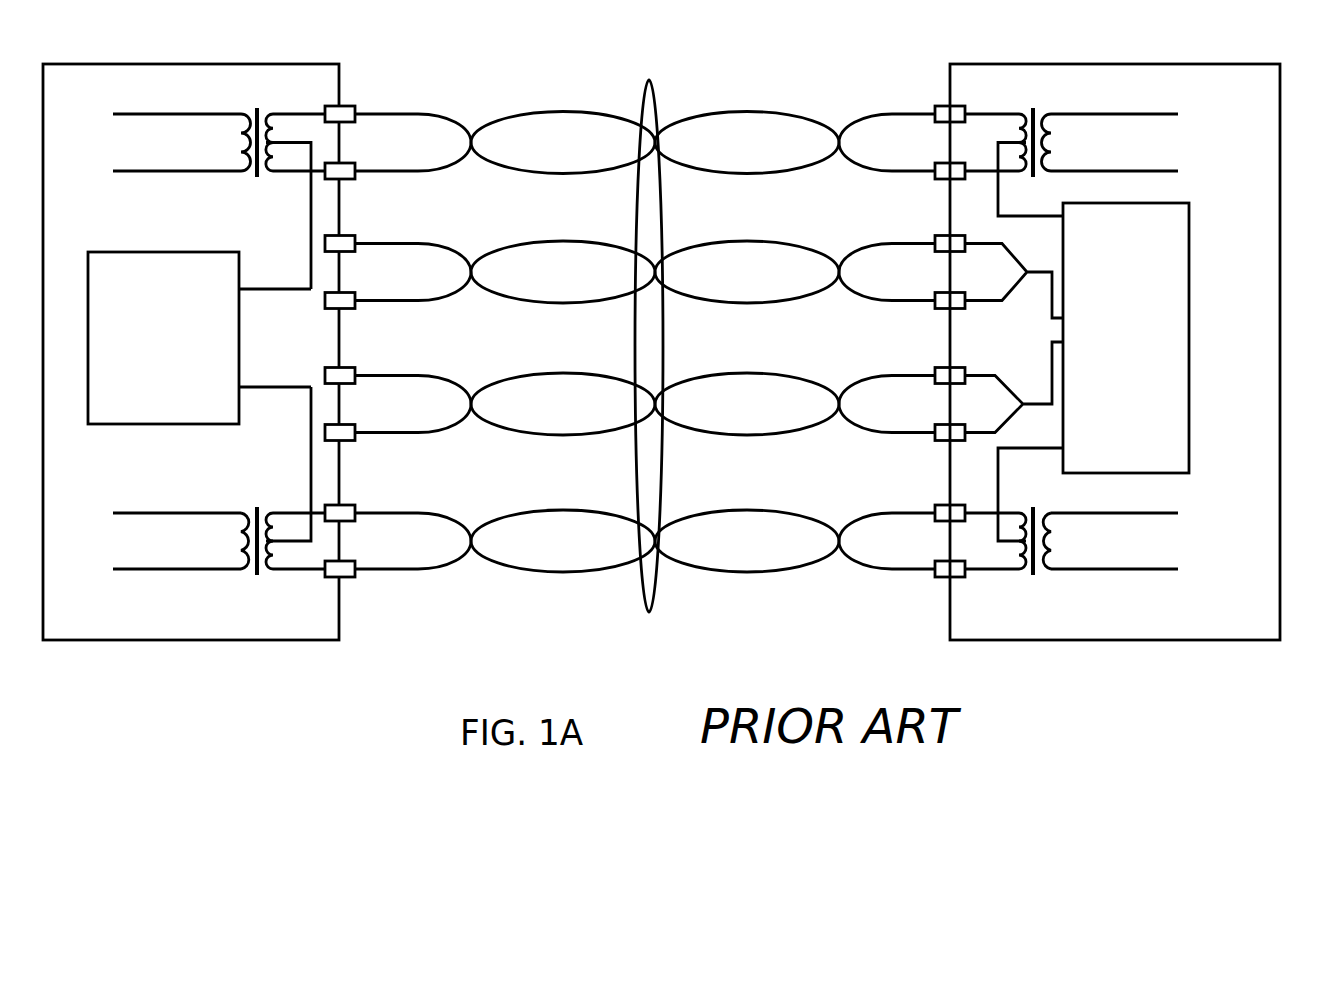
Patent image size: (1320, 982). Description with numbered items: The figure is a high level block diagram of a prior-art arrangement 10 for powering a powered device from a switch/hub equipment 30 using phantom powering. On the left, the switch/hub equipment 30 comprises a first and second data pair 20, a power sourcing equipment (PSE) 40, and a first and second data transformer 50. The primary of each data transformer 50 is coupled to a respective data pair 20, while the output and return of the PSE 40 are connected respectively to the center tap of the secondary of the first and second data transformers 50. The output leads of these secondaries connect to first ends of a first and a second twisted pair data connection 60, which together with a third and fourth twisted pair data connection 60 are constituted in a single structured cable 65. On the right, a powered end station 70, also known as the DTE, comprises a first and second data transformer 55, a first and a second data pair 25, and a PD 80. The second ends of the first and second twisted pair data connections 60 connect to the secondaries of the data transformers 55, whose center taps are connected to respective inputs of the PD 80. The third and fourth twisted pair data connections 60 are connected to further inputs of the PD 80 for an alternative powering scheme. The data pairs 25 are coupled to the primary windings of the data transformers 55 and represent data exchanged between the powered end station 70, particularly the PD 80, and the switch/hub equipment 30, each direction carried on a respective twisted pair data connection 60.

The arrangement 10 is at (693, 64).
The data pair 20 is at (192, 173).
The data pair 25 is at (1118, 114).
The switch/hub equipment 30 is at (192, 643).
The power sourcing equipment (PSE) 40 is at (163, 425).
The data transformer 50 is at (258, 173).
The data transformer 55 is at (1034, 110).
The twisted pair data connection 60 is at (560, 175).
The structured cable 65 is at (653, 614).
The powered end station 70 is at (1122, 641).
The PD 80 is at (1190, 228).